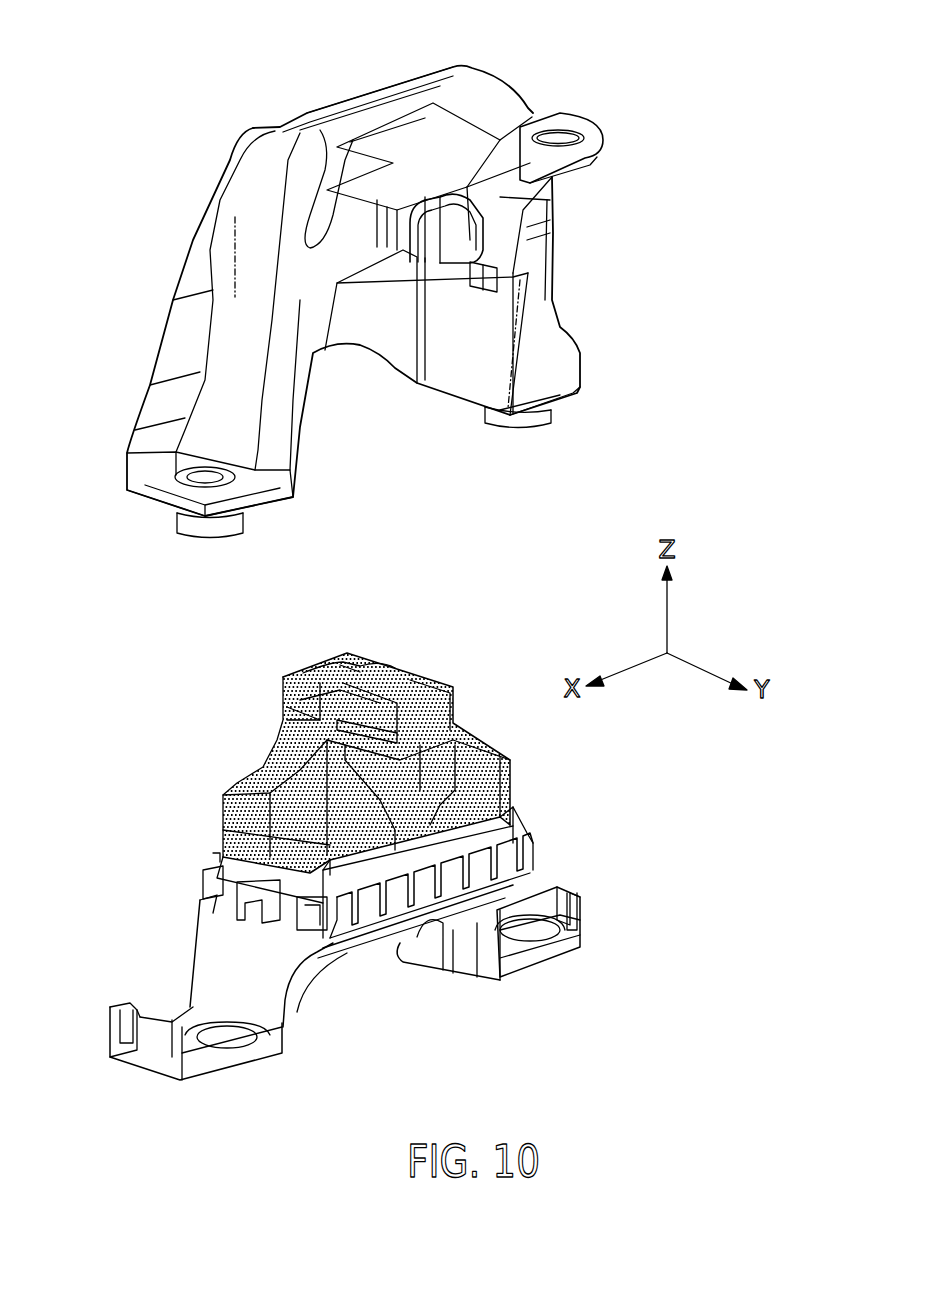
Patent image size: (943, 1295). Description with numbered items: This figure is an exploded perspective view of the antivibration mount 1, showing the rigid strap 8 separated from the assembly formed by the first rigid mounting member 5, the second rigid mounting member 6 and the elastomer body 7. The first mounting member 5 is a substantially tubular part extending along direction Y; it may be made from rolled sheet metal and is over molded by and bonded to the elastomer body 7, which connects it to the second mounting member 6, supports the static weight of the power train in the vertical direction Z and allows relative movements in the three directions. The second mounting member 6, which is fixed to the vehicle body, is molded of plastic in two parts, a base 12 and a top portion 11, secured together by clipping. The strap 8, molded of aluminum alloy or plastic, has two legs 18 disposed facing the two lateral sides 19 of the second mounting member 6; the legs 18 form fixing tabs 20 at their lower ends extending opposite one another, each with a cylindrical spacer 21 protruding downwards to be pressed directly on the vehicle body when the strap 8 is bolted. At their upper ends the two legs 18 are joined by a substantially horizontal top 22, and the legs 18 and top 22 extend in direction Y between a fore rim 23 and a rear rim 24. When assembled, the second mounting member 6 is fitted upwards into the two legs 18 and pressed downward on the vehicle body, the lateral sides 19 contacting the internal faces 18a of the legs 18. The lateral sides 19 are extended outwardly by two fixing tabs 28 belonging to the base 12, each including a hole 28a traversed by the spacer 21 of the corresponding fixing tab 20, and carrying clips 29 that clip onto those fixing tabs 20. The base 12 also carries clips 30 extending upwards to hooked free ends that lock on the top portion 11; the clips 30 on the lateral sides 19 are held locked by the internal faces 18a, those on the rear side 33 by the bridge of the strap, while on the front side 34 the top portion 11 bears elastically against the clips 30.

The antivibration mount 1 is at (640, 505).
The first rigid mounting member 5 is at (453, 740).
The second rigid mounting member 6 is at (515, 803).
The elastomer body 7 is at (460, 767).
The rigid strap 8 is at (538, 75).
The top portion 11 is at (497, 823).
The base 12 is at (473, 937).
The legs 18 is at (542, 303).
The internal faces 18a is at (462, 340).
The lateral sides 19 is at (540, 857).
The fixing tabs 20 is at (560, 388).
The cylindrical spacer 21 is at (538, 413).
The top 22 is at (415, 135).
The fore rim 23 is at (500, 197).
The rear rim 24 is at (305, 112).
The fixing tabs 28 is at (540, 955).
The hole 28a is at (543, 928).
The clips 29 is at (157, 1033).
The clips 30 is at (513, 843).
The rear side 33 is at (213, 855).
The front side 34 is at (408, 912).